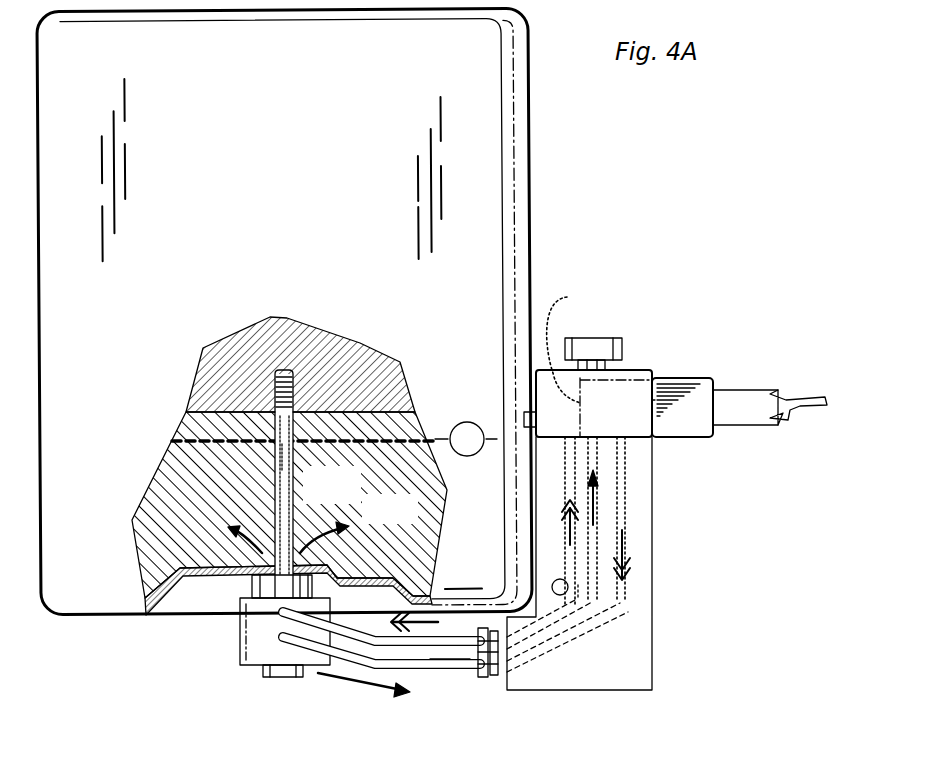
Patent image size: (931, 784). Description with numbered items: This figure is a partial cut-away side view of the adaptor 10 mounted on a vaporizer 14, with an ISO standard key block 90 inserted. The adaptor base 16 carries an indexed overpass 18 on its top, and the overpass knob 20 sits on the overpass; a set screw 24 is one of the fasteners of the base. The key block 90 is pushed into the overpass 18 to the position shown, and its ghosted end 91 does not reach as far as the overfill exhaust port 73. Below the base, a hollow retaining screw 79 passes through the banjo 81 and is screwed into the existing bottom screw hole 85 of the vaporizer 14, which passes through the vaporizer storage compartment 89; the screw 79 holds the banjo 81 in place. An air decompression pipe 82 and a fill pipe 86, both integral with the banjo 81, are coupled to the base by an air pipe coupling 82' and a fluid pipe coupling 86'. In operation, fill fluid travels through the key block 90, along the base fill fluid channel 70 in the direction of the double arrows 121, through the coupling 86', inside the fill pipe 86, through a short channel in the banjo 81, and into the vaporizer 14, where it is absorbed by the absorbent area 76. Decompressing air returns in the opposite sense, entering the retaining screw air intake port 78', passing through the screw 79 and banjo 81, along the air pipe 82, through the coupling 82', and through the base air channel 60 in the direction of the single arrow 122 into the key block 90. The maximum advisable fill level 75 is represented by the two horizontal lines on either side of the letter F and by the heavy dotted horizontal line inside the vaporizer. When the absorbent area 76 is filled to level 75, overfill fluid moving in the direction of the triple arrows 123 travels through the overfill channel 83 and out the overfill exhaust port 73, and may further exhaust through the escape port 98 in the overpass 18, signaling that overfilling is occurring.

The adaptor 10 is at (728, 276).
The vaporizer 14 is at (268, 72).
The adaptor base 16 is at (640, 682).
The indexed overpass 18 is at (638, 367).
The overpass knob 20 is at (593, 338).
The set screw 24 is at (555, 593).
The base air channel 60 is at (603, 588).
The base fill fluid channel 70 is at (627, 467).
The overfill exhaust port 73 is at (572, 438).
The maximum advisable fill level 75 is at (172, 441).
The absorbent area 76 is at (146, 595).
The retaining screw air intake port 78' is at (314, 473).
The hollow retaining screw 79 is at (283, 690).
The banjo 81 is at (250, 646).
The air decompression pipe 82 is at (381, 700).
The air pipe coupling 82' is at (506, 692).
The overfill channel 83 is at (578, 585).
The bottom screw hole 85 is at (291, 374).
The fill pipe 86 is at (381, 665).
The fluid pipe coupling 86' is at (455, 703).
The vaporizer storage compartment 89 is at (175, 590).
The key block 90 is at (718, 369).
The end of key block 91 is at (575, 344).
The escape port 98 is at (524, 418).
The double arrows 121 is at (347, 525).
The single arrows 122 is at (330, 685).
The triple arrows 123 is at (570, 542).